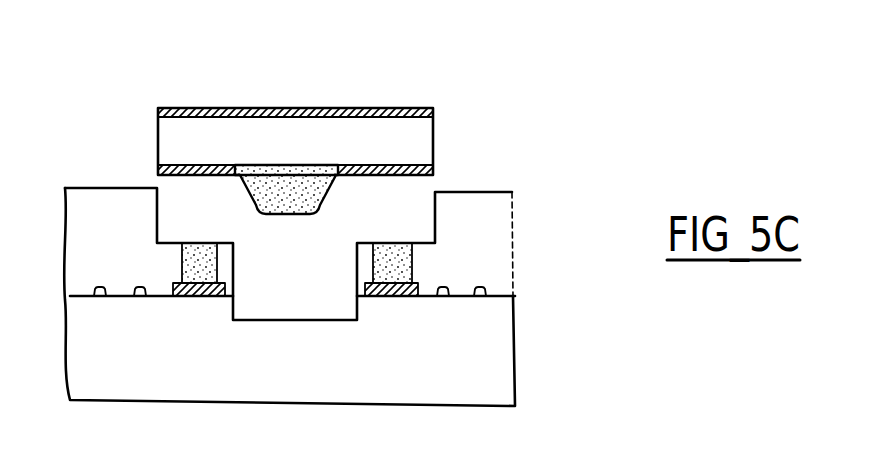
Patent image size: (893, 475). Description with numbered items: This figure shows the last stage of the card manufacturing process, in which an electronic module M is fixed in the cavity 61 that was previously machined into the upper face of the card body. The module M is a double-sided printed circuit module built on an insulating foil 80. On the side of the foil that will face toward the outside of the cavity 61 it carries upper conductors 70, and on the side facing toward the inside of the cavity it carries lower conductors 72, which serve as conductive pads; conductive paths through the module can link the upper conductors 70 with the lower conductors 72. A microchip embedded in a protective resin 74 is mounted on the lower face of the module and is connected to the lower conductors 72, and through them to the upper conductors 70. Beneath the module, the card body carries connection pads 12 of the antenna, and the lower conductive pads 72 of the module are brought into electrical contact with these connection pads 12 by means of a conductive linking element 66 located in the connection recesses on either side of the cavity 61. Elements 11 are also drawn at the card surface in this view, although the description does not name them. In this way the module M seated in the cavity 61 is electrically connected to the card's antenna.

The electronic module M is at (468, 81).
The upper conductors 70 is at (188, 108).
The insulating foil 80 is at (426, 140).
The lower conductors 72 is at (203, 177).
The protective resin 74 is at (318, 195).
The cavity 61 is at (289, 297).
The conductive linking element 66 is at (192, 262).
The contacts on substrate surface 11 is at (97, 296).
The connection pads 12 is at (200, 297).